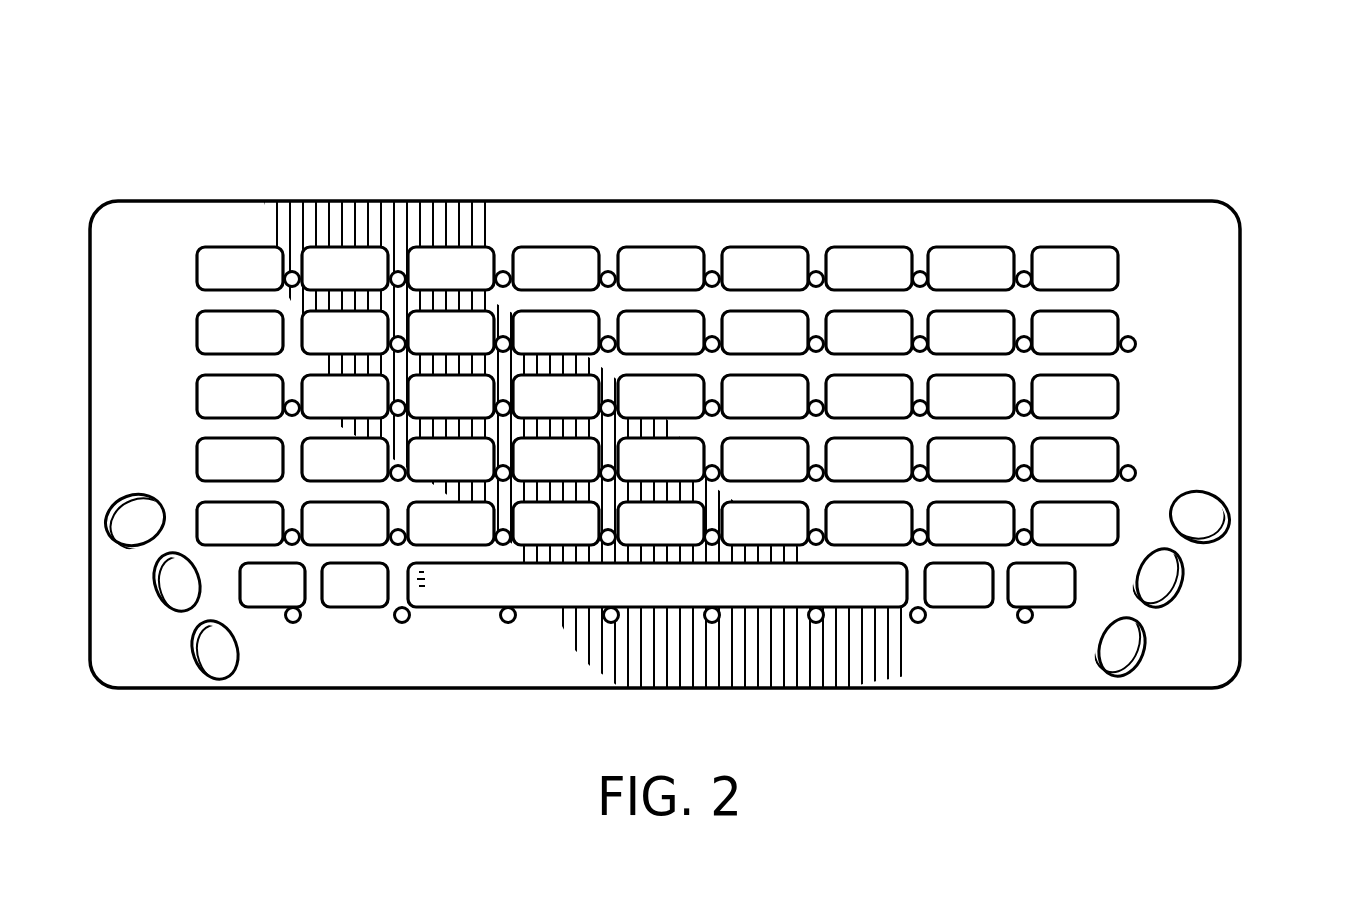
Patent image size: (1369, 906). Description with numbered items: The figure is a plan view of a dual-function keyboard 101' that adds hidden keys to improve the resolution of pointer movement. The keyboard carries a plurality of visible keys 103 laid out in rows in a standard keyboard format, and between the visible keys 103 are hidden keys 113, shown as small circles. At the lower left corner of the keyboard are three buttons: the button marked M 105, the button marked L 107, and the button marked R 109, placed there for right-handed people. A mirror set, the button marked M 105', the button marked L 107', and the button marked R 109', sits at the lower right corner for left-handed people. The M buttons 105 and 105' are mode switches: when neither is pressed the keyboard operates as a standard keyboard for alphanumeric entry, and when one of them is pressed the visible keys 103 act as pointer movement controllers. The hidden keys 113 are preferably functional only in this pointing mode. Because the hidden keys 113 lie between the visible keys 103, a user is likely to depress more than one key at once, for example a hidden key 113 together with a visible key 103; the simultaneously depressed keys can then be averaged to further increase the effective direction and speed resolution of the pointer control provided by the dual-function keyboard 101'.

The dual-function keyboard 101' is at (665, 376).
The visible keys 103 is at (657, 258).
The hidden keys 113 is at (815, 272).
The button marked M 105 is at (96, 522).
The button marked L 107 is at (115, 583).
The button marked R 109 is at (134, 651).
The button marked M 105' is at (1240, 515).
The button marked L 107' is at (1223, 575).
The button marked R 109' is at (1206, 644).